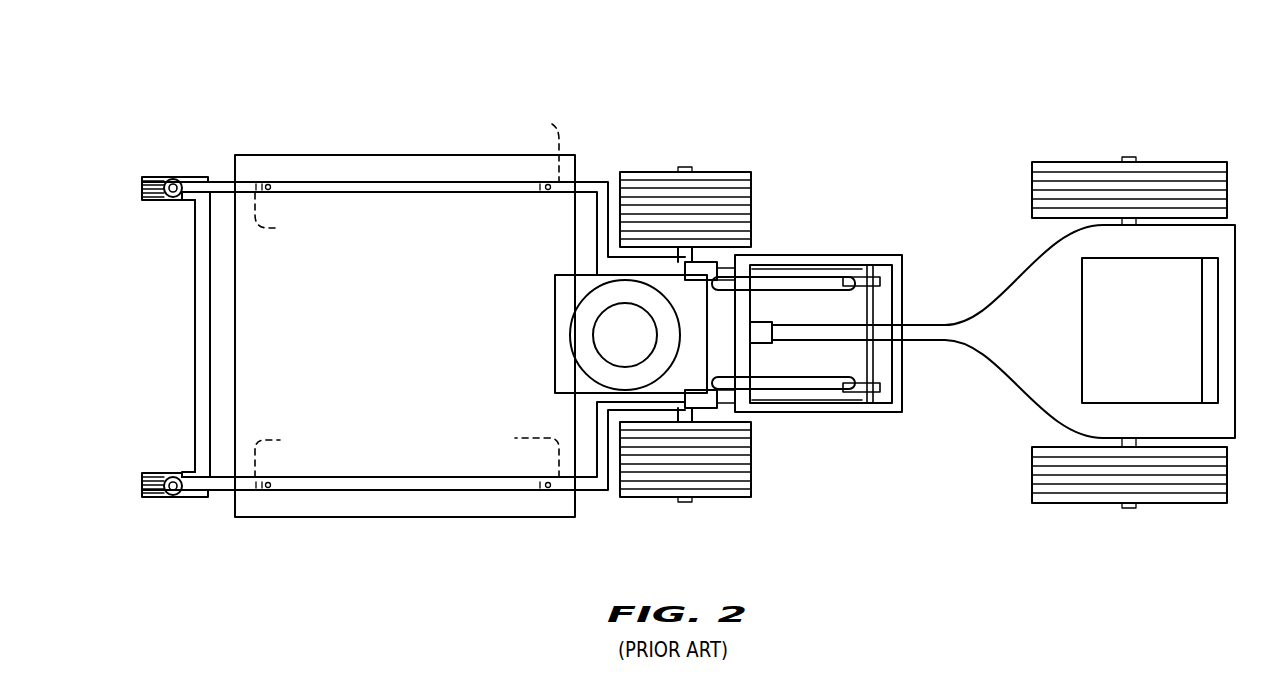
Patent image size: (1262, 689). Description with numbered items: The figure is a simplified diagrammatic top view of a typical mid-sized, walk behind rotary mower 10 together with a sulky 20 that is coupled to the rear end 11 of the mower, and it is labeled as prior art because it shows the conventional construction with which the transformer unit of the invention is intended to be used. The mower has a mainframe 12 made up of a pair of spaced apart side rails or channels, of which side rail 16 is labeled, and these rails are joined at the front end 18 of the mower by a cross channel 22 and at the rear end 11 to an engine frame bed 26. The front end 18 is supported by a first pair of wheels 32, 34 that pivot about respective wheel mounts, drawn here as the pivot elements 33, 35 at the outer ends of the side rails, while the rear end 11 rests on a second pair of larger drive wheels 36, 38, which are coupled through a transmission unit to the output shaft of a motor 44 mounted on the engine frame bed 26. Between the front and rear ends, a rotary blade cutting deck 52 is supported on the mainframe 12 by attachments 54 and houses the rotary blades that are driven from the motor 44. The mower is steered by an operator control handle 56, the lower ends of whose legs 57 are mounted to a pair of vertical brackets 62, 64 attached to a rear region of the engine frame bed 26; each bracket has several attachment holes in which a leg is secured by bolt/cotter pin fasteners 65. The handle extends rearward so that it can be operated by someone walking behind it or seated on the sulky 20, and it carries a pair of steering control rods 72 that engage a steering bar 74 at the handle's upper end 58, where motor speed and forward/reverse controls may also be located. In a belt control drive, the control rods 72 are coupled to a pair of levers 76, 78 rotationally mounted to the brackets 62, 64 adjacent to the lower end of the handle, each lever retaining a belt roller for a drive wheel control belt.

The walk behind rotary mower 10 is at (458, 66).
The rear end 11 is at (727, 262).
The mainframe 12 is at (221, 170).
The side rail 16 is at (347, 182).
The front end 18 is at (195, 292).
The sulky 20 is at (1188, 122).
The cross channel 22 is at (210, 346).
The engine frame bed 26 is at (590, 275).
The front wheel 32 is at (142, 486).
The lower caster pivot 33 is at (173, 496).
The front wheel 34 is at (142, 187).
The upper caster pivot 35 is at (173, 179).
The drive wheel 36 is at (752, 485).
The drive wheel 38 is at (734, 172).
The motor 44 is at (555, 372).
The rotary blade cutting deck 52 is at (395, 351).
The attachments 54 is at (407, 289).
The operator control handle 56 is at (890, 242).
The legs 57 is at (836, 255).
The upper end 58 is at (905, 372).
The vertical bracket 62 is at (745, 397).
The vertical bracket 64 is at (752, 271).
The bolt/cotter pin fasteners 65 is at (735, 257).
The steering control rods 72 is at (820, 377).
The steering bar 74 is at (873, 300).
The lever 76 is at (697, 283).
The lever 78 is at (697, 388).